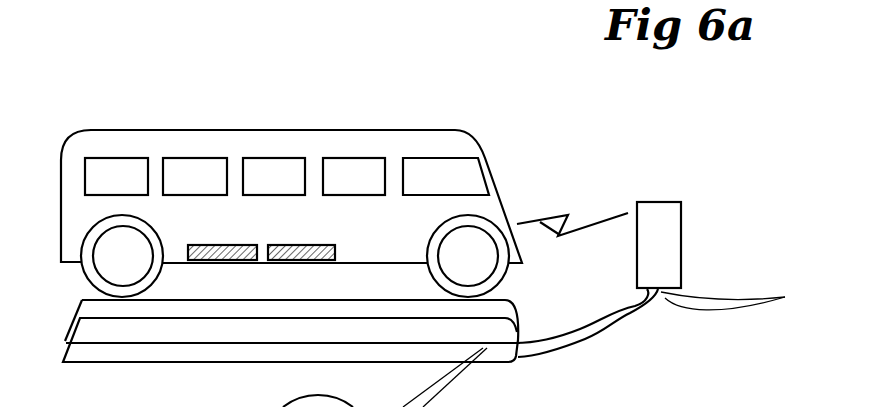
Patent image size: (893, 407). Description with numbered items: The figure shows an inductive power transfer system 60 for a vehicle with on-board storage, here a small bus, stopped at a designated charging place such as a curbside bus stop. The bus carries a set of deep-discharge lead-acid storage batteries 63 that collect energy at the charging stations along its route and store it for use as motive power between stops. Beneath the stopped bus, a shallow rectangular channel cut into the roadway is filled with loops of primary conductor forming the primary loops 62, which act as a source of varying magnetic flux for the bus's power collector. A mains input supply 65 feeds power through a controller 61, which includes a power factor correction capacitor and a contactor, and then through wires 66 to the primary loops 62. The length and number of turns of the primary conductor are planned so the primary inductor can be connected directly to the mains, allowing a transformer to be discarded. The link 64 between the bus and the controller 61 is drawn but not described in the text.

The inductive power transfer system 60 is at (683, 107).
The controller 61 is at (683, 201).
The primary loops 62 is at (65, 359).
The storage batteries 63 is at (212, 261).
The wireless signal link 64 is at (568, 215).
The mains input supply 65 is at (738, 298).
The wires 66 is at (614, 329).